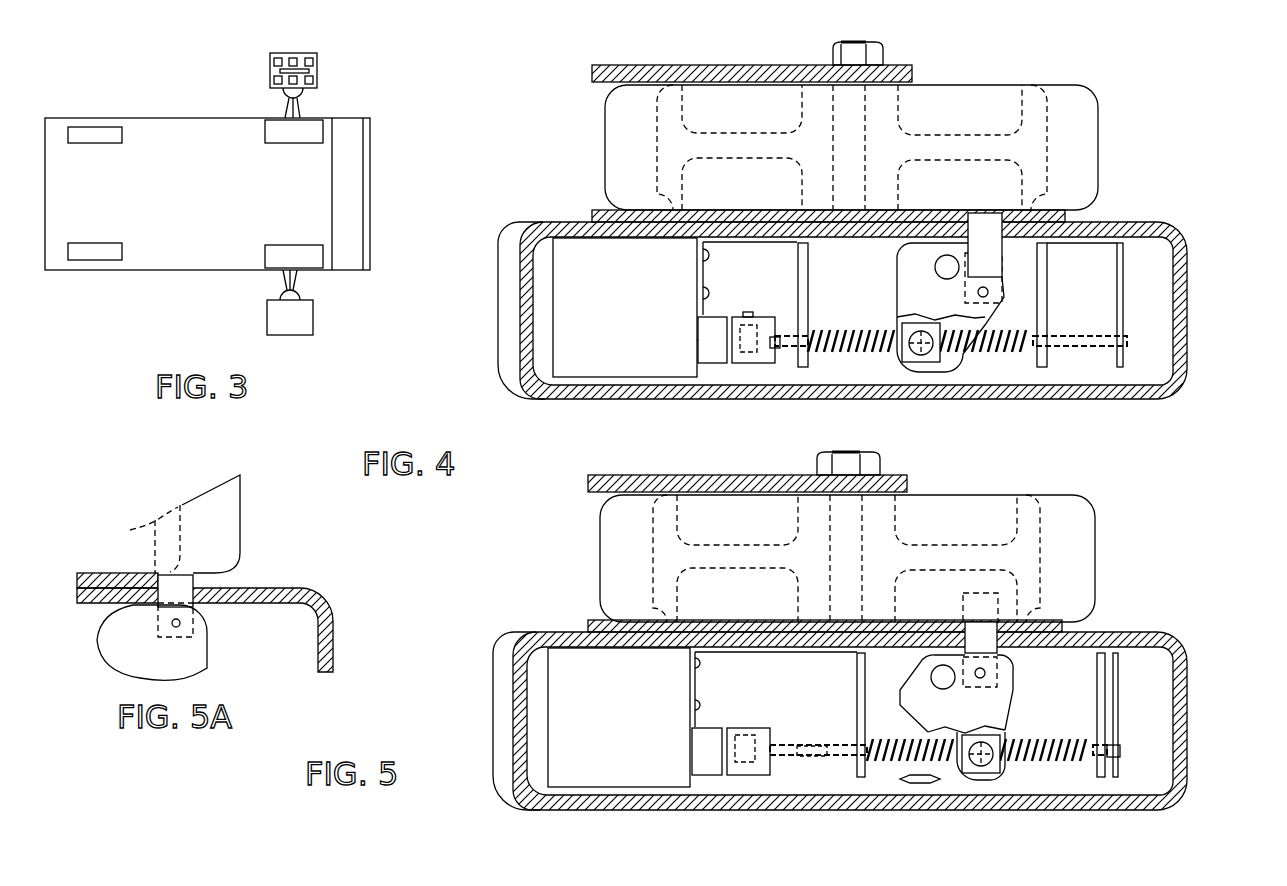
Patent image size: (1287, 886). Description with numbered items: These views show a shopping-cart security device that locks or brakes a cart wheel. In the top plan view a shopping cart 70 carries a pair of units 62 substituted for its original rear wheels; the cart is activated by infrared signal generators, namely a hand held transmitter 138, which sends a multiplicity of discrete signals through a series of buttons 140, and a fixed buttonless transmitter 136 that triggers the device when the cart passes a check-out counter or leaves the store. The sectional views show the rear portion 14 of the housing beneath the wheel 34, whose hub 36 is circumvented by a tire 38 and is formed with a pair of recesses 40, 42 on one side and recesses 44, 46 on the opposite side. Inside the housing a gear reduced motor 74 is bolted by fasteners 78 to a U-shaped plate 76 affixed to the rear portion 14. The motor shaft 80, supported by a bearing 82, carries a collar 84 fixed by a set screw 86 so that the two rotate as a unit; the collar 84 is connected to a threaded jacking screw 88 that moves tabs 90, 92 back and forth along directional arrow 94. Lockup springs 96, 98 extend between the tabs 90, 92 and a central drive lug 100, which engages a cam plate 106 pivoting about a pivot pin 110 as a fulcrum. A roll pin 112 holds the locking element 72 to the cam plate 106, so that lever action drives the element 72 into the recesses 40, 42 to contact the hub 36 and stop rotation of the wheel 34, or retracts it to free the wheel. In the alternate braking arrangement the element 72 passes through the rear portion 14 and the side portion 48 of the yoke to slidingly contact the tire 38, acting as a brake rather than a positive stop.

In FIG. 5A, the rear portion 14 is at (92, 597).
In FIG. 4, the rear portion 14 is at (521, 240).
In FIG. 5A, the wheel 34 is at (197, 489).
In FIG. 4, the wheel 34 is at (1102, 135).
In FIG. 5, the wheel 34 is at (1106, 553).
In FIG. 5A, the hub 36 is at (152, 518).
In FIG. 5A, the tire 38 is at (236, 493).
In FIG. 4, the recess 40 is at (695, 192).
In FIG. 4, the recess 42 is at (1007, 187).
In FIG. 4, the recess 44 is at (733, 100).
In FIG. 4, the recess 46 is at (970, 105).
In FIG. 5A, the side portion 48 is at (77, 583).
In FIG. 3, the unit 62 is at (326, 108).
In FIG. 3, the shopping cart 70 is at (175, 115).
In FIG. 5A, the element 72 is at (185, 583).
In FIG. 4, the element 72 is at (999, 250).
In FIG. 5, the element 72 is at (980, 630).
In FIG. 4, the gear reduced motor 74 is at (588, 367).
In FIG. 5, the gear reduced motor 74 is at (600, 775).
In FIG. 4, the U-shaped plate 76 is at (737, 244).
In FIG. 4, the fasteners 78 is at (710, 293).
In FIG. 4, the motor shaft 80 is at (730, 355).
In FIG. 4, the bearing 82 is at (712, 363).
In FIG. 4, the collar 84 is at (762, 367).
In FIG. 5, the collar 84 is at (742, 775).
In FIG. 4, the set screw 86 is at (751, 314).
In FIG. 4, the threaded jacking screw 88 is at (785, 347).
In FIG. 5, the tab 90 is at (857, 777).
In FIG. 4, the tab 92 is at (1043, 315).
In FIG. 5, the tab 92 is at (1100, 777).
In FIG. 5, the directional arrow 94 is at (920, 785).
In FIG. 5, the lockup spring 96 is at (947, 758).
In FIG. 5, the lockup spring 98 is at (1050, 767).
In FIG. 5, the central drive lug 100 is at (997, 783).
In FIG. 5A, the cam plate 106 is at (200, 642).
In FIG. 4, the cam plate 106 is at (935, 368).
In FIG. 5, the cam plate 106 is at (1003, 708).
In FIG. 5, the pivot pin 110 is at (931, 678).
In FIG. 5, the roll pin 112 is at (986, 673).
In FIG. 3, the fixed buttonless transmitter 136 is at (303, 315).
In FIG. 3, the hand held transmitter 138 is at (292, 53).
In FIG. 3, the buttons 140 is at (330, 65).